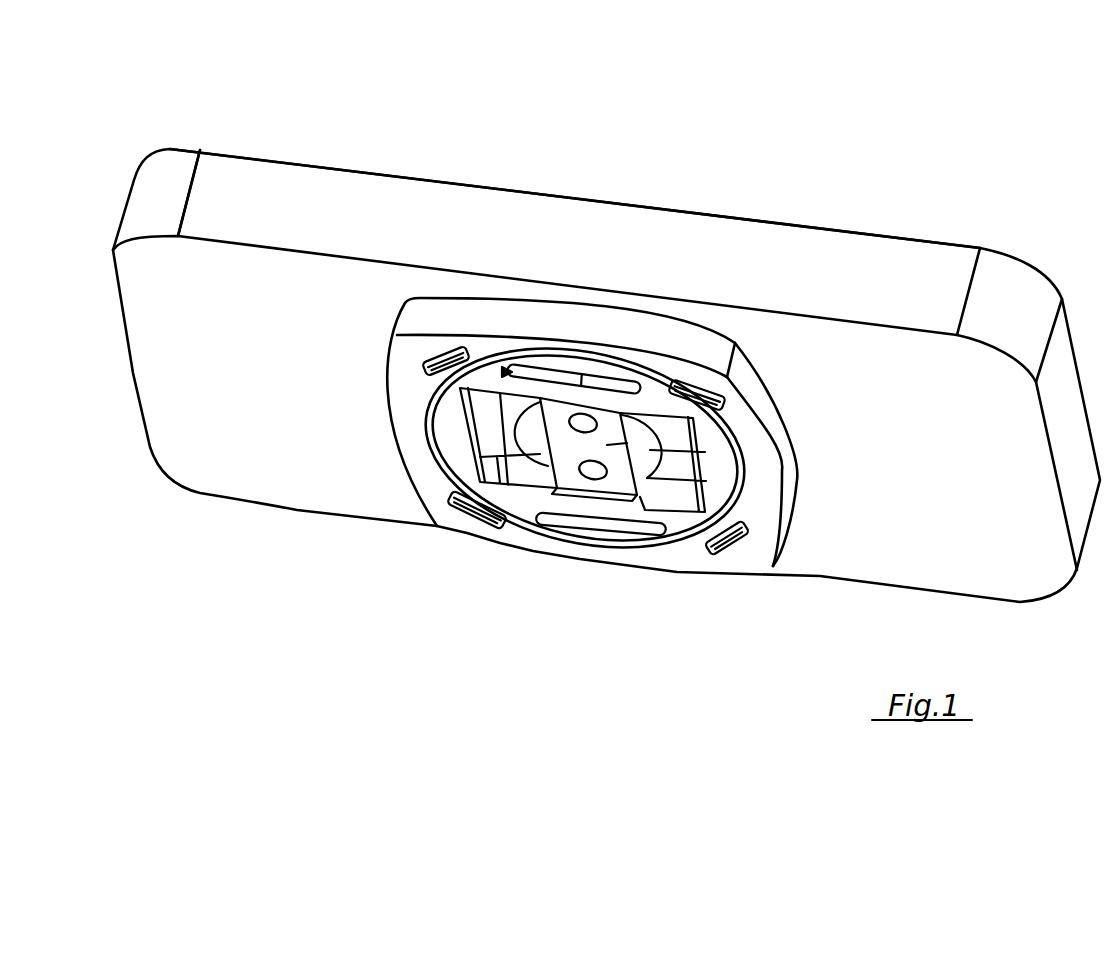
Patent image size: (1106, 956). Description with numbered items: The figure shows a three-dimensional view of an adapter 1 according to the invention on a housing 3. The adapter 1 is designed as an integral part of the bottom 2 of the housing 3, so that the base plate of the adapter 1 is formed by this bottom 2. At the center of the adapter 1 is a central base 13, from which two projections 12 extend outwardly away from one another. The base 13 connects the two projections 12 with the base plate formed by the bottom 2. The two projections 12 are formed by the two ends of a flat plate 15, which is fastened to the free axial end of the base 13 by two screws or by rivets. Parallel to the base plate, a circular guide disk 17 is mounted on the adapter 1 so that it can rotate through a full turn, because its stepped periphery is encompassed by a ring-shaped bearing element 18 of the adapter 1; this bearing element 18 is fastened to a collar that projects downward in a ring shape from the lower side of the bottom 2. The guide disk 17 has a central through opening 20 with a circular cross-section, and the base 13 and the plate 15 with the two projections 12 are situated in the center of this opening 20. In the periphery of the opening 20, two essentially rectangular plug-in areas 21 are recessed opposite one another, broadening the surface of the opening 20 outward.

The adapter 1 is at (590, 381).
The bottom 2 is at (160, 406).
The housing 3 is at (273, 185).
The projections 12 is at (590, 402).
The central base 13 is at (537, 448).
The flat plate 15 is at (685, 460).
The circular guide disk 17 is at (493, 377).
The ring-shaped bearing element 18 is at (397, 358).
The central through opening 20 is at (676, 512).
The plug-in areas 21 is at (493, 417).